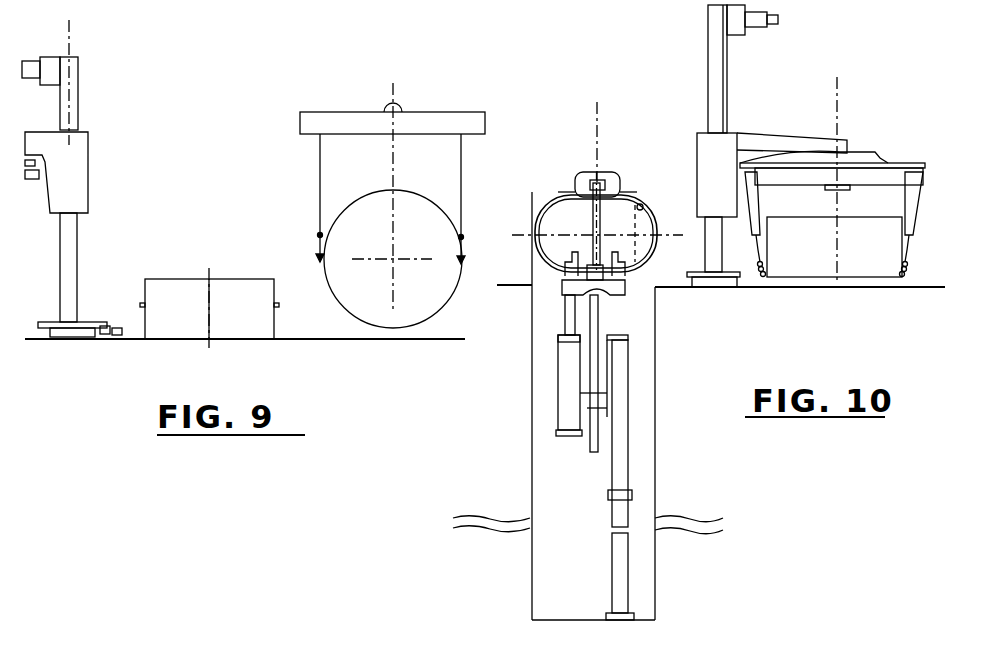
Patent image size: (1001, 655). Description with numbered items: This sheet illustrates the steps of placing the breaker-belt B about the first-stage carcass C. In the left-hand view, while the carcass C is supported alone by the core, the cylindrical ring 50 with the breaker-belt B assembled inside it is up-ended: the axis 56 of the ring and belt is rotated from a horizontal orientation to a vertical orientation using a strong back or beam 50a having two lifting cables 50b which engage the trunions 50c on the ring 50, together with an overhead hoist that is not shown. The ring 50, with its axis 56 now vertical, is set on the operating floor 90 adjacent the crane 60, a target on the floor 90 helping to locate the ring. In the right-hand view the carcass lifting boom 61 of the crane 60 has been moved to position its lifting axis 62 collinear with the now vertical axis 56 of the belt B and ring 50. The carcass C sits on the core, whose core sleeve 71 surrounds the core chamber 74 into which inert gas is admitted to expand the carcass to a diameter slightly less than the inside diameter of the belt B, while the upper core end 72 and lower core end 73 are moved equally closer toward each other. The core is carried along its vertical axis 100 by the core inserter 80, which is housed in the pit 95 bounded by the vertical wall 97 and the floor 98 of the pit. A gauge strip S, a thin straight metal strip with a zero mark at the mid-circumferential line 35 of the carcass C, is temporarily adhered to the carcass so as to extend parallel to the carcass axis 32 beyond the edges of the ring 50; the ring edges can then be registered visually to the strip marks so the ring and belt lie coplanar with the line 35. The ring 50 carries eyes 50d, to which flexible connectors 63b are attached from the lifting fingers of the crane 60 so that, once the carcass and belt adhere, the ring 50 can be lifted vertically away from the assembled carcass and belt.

In FIG. 9, the crane 60 is at (86, 116).
In FIG. 10, the crane 60 is at (760, 52).
In FIG. 9, the cylindrical ring 50 is at (163, 277).
In FIG. 10, the cylindrical ring 50 is at (877, 284).
In FIG. 9, the breaker-belt B is at (190, 300).
In FIG. 9, the axis of the ring 56 is at (212, 298).
In FIG. 10, the axis of the ring 56 is at (835, 265).
In FIG. 9, the trunions 50c is at (141, 305).
In FIG. 9, the strong back or beam 50a is at (335, 118).
In FIG. 9, the lifting cables 50b is at (320, 165).
In FIG. 9, the operating floor 90 is at (450, 339).
In FIG. 10, the boom 61 is at (795, 143).
In FIG. 10, the lifting axis 62 is at (838, 95).
In FIG. 10, the flexible connectors 63b is at (757, 255).
In FIG. 10, the eyes 50d is at (763, 272).
In FIG. 10, the pit 95 is at (582, 510).
In FIG. 10, the vertical wall of the pit 97 is at (655, 490).
In FIG. 10, the floor of the pit 98 is at (562, 620).
In FIG. 10, the first-stage carcass C is at (549, 210).
In FIG. 10, the gauge strip S is at (533, 205).
In FIG. 10, the mid-circumferential line of the carcass 35 is at (535, 237).
In FIG. 10, the upper core end 72 is at (570, 196).
In FIG. 10, the vertical axis 100 is at (597, 112).
In FIG. 10, the axis of the carcass 32 is at (597, 112).
In FIG. 10, the core sleeve 71 is at (643, 206).
In FIG. 10, the core chamber 74 is at (638, 233).
In FIG. 10, the lower core end 73 is at (626, 276).
In FIG. 10, the core inserter 80 is at (578, 456).